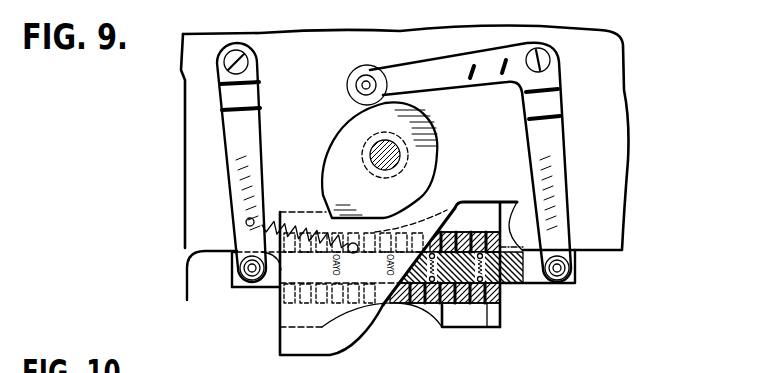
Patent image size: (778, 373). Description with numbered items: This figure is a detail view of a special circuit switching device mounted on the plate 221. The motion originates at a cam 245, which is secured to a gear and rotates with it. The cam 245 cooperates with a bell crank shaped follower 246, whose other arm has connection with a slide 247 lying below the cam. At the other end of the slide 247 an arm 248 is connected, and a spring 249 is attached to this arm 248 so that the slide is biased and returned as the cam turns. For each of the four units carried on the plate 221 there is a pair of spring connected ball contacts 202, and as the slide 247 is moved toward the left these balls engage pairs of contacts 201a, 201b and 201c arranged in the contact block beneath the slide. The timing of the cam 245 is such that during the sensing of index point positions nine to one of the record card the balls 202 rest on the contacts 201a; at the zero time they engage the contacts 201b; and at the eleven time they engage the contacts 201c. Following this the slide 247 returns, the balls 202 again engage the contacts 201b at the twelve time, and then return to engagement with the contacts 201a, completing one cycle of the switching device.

The plate 221 is at (610, 107).
The cam 245 is at (357, 177).
The bell crank shaped follower 246 is at (543, 108).
The slide 247 is at (534, 270).
The arm 248 is at (238, 165).
The spring 249 is at (274, 218).
The spring connected ball contacts 202 is at (517, 202).
The contacts 201a is at (490, 330).
The contacts 201b is at (470, 306).
The contacts 201c is at (443, 306).